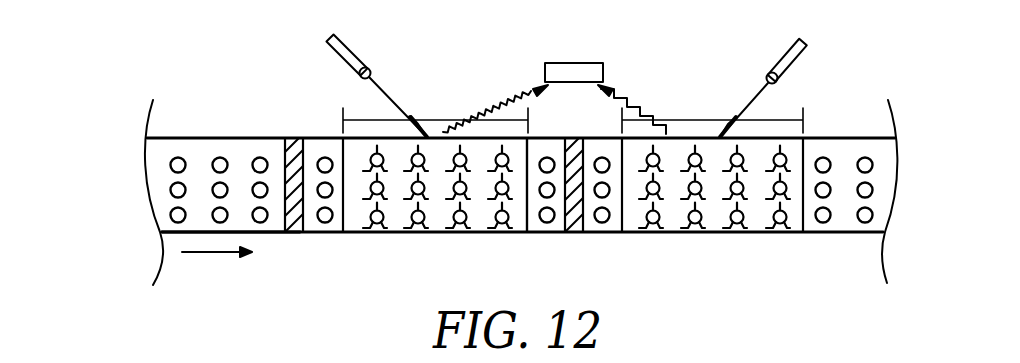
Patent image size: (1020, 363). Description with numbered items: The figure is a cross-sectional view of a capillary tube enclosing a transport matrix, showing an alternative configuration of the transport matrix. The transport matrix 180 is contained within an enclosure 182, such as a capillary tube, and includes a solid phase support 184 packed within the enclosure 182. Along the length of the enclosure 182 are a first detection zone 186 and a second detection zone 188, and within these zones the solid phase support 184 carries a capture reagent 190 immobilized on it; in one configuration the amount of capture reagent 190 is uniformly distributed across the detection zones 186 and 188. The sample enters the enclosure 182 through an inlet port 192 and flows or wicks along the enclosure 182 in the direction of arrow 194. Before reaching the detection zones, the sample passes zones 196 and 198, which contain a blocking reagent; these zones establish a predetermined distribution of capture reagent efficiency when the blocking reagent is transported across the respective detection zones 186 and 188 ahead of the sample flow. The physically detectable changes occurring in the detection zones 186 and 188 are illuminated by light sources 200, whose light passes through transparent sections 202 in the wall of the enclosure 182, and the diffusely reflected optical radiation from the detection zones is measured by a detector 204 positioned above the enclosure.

The transport matrix 180 is at (215, 150).
The enclosure 182 is at (178, 232).
The solid phase support 184 is at (459, 218).
The first detection zone 186 is at (518, 230).
The second detection zone 188 is at (757, 223).
The capture reagent 190 is at (445, 226).
The inlet port 192 is at (163, 193).
The arrow 194 is at (217, 253).
The zone containing a blocking reagent 196 is at (296, 232).
The zone containing a blocking reagent 198 is at (575, 232).
The light source 200 is at (343, 41).
The transparent section 202 is at (360, 120).
The detector 204 is at (580, 70).